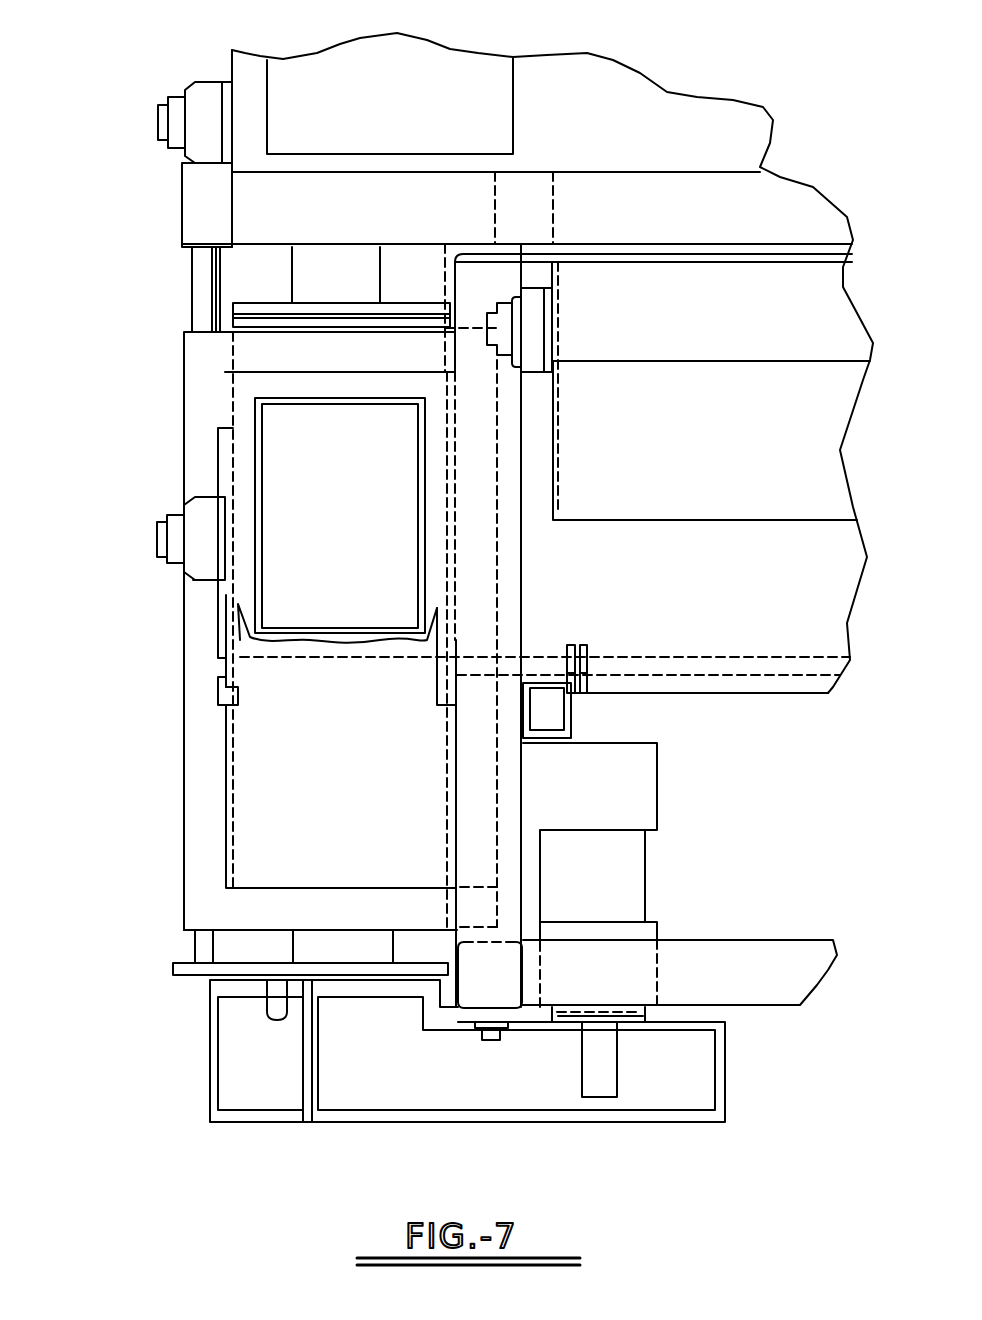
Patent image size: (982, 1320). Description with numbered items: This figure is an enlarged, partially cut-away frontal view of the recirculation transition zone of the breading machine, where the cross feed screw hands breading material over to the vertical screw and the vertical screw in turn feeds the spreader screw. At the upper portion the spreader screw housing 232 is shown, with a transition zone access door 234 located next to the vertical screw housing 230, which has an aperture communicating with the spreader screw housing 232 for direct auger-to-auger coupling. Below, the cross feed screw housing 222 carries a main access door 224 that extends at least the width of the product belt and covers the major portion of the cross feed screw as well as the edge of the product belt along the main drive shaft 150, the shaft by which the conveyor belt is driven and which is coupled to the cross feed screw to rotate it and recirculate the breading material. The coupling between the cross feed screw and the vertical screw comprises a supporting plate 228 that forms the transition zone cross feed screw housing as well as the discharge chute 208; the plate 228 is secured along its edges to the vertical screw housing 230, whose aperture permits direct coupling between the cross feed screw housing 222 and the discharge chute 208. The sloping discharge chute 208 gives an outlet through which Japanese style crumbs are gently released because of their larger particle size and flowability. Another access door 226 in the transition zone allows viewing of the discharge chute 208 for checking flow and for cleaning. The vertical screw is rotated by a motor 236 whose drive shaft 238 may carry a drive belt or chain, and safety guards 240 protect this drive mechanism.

The main drive shaft 150 is at (530, 328).
The discharge chute 208 is at (292, 817).
The cross feed screw housing 222 is at (740, 612).
The main access door 224 is at (727, 440).
The access door 226 is at (298, 597).
The supporting plate 228 is at (183, 412).
The vertical screw housing 230 is at (310, 275).
The spreader screw housing 232 is at (690, 115).
The transition zone access door 234 is at (453, 82).
The motor 236 is at (645, 870).
The drive shaft 238 is at (617, 1072).
The safety guards 240 is at (380, 1123).